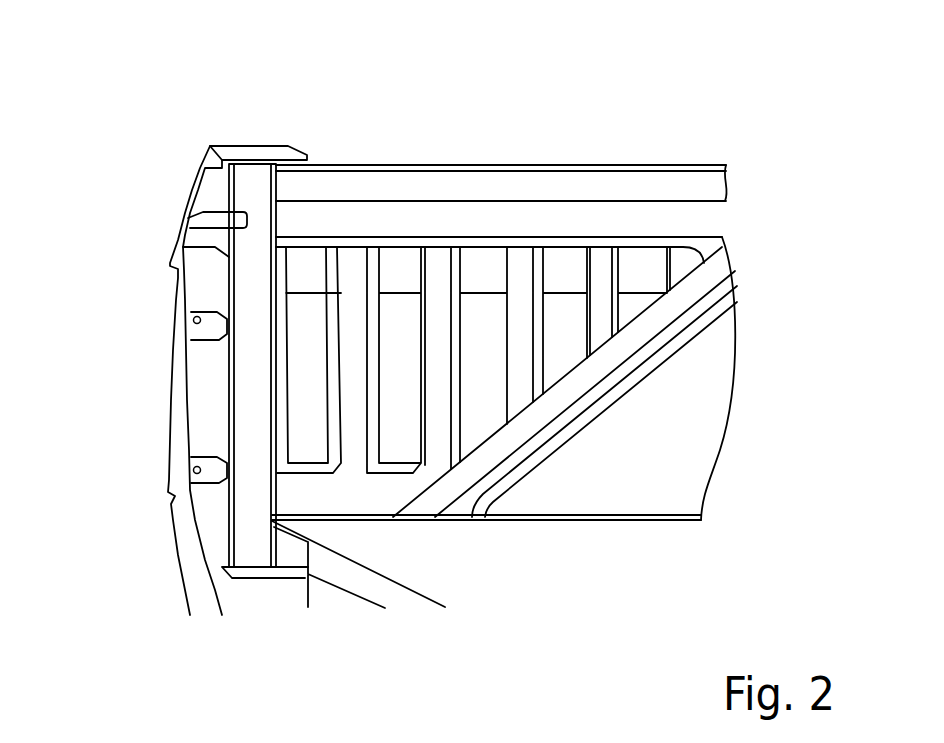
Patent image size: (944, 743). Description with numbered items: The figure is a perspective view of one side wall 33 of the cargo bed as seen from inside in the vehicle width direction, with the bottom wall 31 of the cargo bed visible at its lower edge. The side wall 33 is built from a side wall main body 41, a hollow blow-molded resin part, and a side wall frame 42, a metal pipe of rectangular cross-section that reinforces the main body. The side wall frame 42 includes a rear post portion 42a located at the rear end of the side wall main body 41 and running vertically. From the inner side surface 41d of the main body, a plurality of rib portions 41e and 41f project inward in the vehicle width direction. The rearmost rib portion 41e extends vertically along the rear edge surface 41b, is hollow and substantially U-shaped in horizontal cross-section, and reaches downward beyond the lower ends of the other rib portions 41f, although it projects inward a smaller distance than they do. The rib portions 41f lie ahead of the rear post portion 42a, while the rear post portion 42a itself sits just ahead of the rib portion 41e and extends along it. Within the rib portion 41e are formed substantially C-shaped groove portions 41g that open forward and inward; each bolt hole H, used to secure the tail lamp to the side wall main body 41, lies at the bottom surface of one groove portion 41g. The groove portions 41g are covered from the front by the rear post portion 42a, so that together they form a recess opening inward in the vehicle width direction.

The side wall 33 is at (586, 97).
The side wall frame 42 is at (512, 190).
The rear post portion 42a is at (250, 410).
The side wall main body 41 is at (595, 245).
The rib portions 41f is at (404, 303).
The rear edge surface 41b is at (177, 262).
The rib portion 41e is at (202, 372).
The groove portions 41g is at (213, 318).
The bolt holes H is at (194, 320).
The inner side surface 41d is at (294, 497).
The bottom wall 31 is at (387, 562).